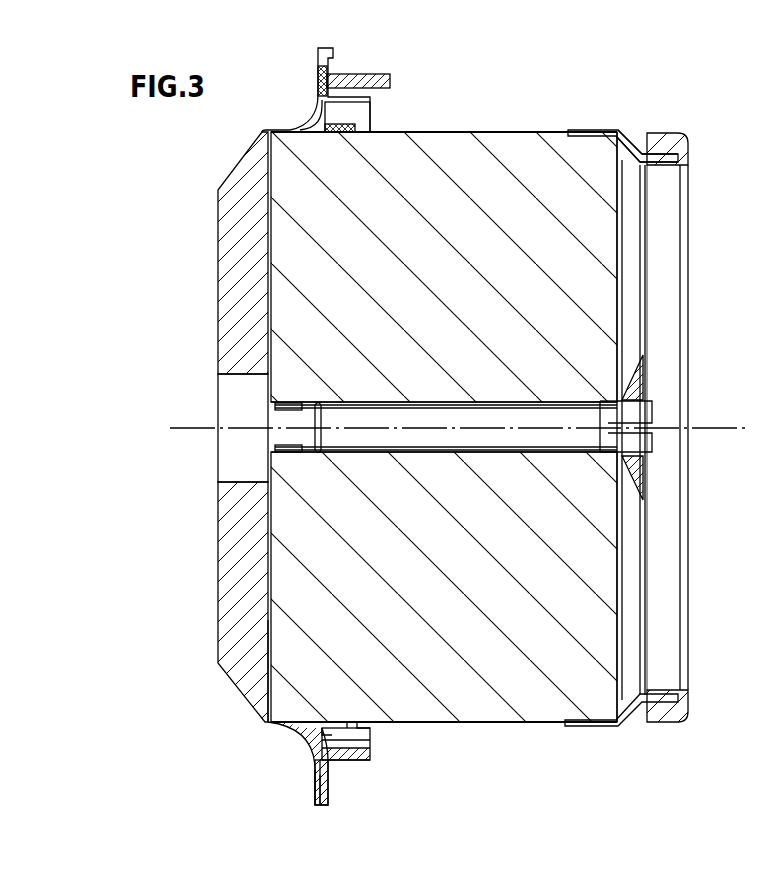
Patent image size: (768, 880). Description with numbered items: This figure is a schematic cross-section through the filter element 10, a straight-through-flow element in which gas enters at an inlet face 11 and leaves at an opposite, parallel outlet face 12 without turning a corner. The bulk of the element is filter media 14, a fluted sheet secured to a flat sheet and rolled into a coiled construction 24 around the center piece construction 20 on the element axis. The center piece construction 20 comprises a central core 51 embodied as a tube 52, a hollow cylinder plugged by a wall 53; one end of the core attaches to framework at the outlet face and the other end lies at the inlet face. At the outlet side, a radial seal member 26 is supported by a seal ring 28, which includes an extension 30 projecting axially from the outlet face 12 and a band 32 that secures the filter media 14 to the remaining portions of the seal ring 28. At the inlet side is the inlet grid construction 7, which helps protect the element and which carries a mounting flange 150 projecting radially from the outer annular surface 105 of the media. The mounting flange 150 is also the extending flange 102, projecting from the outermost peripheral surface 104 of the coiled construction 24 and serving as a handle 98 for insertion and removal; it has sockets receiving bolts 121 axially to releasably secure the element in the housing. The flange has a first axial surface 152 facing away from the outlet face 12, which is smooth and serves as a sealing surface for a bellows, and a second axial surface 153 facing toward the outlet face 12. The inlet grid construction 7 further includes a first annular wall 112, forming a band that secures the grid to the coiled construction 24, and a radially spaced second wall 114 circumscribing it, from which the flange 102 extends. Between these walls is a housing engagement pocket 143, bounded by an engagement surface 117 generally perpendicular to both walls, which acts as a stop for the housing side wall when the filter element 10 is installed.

The inlet grid construction 7 is at (200, 262).
The filter element 10 is at (421, 426).
The inlet face 11 is at (252, 654).
The outlet face 12 is at (612, 646).
The filter media 14 is at (485, 724).
The center piece construction 20 is at (475, 403).
The coiled construction 24 is at (517, 727).
The radial seal member 26 is at (660, 133).
The seal ring 28 is at (630, 142).
The extension 30 is at (664, 162).
The band 32 is at (589, 129).
The central core 51 is at (410, 404).
The tube 52 is at (505, 454).
The wall 53 is at (322, 412).
The handle 98 is at (301, 756).
The extending flange 102 is at (318, 798).
The outermost peripheral surface 104 is at (437, 724).
The outer annular surface 105 is at (410, 132).
The first annular wall 112 is at (352, 724).
The second wall 114 is at (352, 762).
The engagement surface 117 is at (335, 728).
The bolts 121 is at (384, 76).
The housing engagement pocket 143 is at (330, 744).
The mounting flange 150 is at (318, 76).
The first axial surface 152 is at (316, 780).
The second axial surface 153 is at (324, 790).